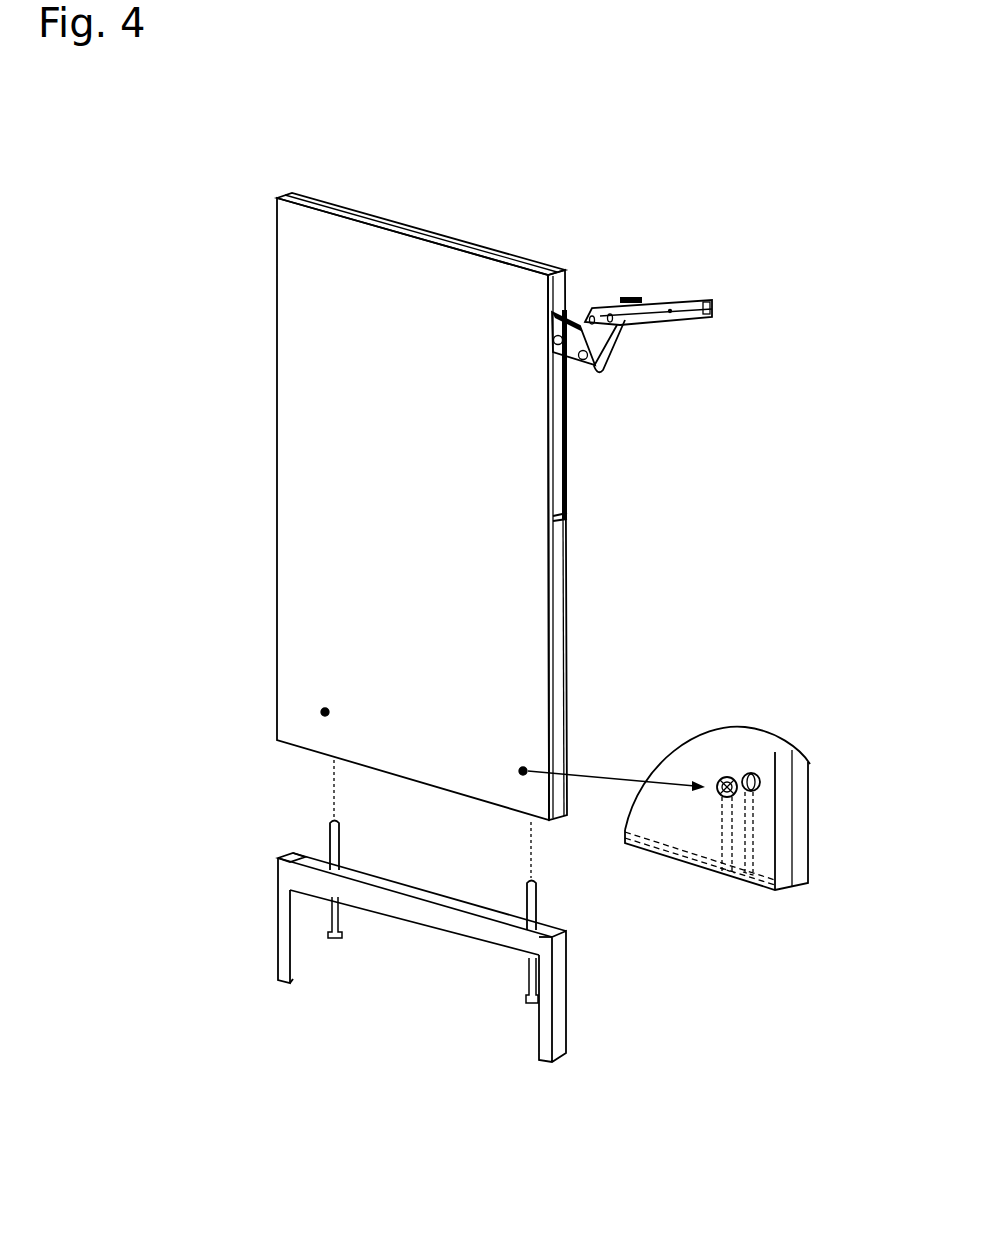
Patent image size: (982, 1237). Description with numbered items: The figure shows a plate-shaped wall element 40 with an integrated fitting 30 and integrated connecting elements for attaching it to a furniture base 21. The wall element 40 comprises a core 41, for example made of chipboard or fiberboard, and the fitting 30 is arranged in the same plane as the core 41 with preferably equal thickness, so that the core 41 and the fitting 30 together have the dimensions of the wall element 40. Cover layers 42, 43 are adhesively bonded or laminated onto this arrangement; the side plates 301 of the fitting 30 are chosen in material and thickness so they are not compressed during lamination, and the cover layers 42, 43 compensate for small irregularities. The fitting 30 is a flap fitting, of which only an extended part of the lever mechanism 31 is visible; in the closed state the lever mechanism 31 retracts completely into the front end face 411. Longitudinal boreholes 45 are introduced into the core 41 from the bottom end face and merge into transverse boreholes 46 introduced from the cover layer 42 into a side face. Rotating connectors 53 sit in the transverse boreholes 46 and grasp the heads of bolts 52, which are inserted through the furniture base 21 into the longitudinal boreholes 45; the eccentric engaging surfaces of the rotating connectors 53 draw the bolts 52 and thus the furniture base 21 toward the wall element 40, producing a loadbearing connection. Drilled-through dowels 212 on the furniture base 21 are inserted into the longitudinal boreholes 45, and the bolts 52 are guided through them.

The wall element 40 is at (658, 256).
The core 41 is at (568, 687).
The front end face 411 is at (556, 604).
The cover layer 42 is at (298, 540).
The cover layer 43 is at (517, 250).
The longitudinal boreholes 45 is at (740, 840).
The transverse boreholes 46 is at (755, 776).
The fitting 30 is at (593, 426).
The lever mechanism 31 is at (638, 318).
The side plates 301 is at (565, 483).
The rotating connectors 53 is at (322, 710).
The furniture base 21 is at (428, 915).
The drilled-through dowels 212 is at (340, 856).
The bolts 52 is at (335, 940).